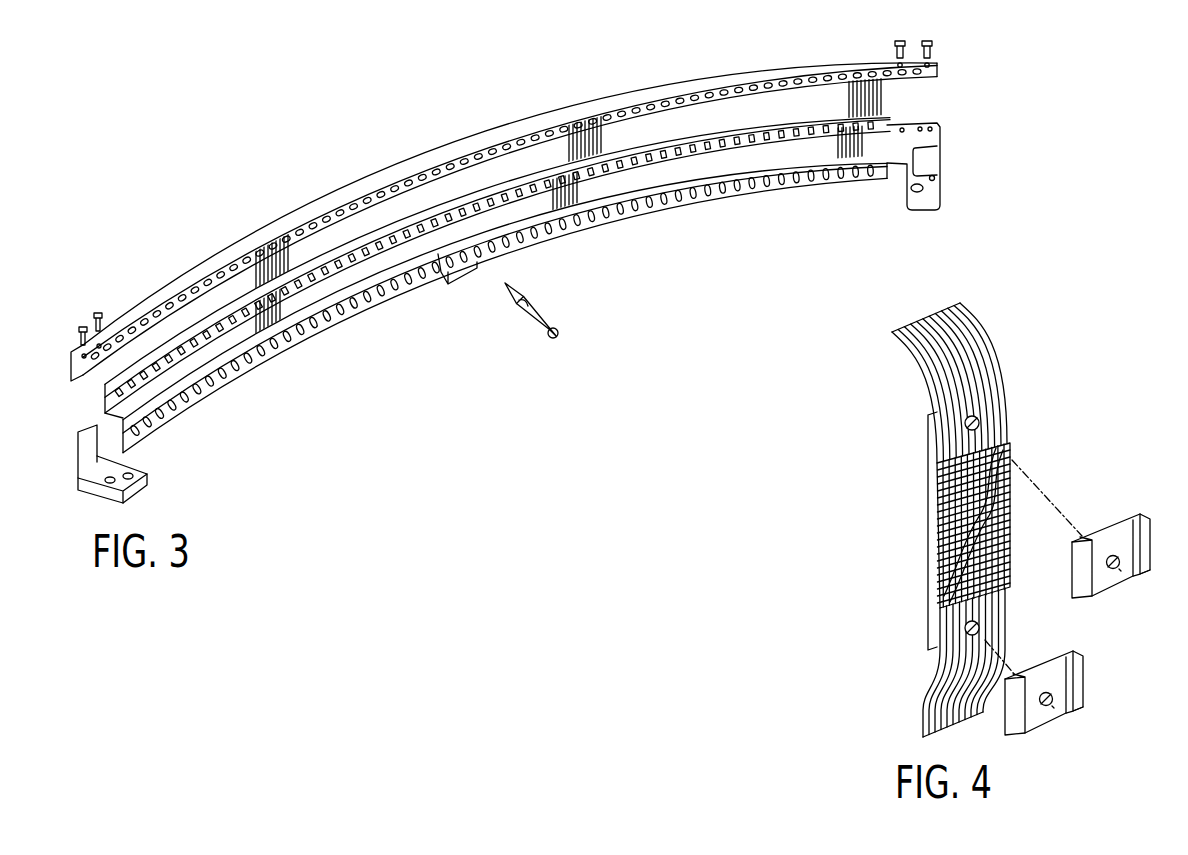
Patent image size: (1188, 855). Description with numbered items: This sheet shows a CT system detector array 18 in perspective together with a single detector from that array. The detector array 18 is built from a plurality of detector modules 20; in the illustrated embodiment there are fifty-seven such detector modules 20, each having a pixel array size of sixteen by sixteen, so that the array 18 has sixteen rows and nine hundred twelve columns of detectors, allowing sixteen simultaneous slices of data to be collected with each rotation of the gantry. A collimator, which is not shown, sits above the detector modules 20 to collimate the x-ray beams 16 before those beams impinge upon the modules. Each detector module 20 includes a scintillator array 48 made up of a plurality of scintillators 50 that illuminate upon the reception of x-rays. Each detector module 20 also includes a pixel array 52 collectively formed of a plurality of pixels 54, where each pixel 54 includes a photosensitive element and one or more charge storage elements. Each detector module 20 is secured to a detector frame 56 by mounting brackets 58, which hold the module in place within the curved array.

In FIG. 3, the x-ray beams 16 is at (540, 318).
In FIG. 3, the detector array 18 is at (397, 158).
In FIG. 3, the detector module 20 is at (257, 255).
In FIG. 4, the detector module 20 is at (1085, 365).
In FIG. 4, the scintillator array 48 is at (1018, 509).
In FIG. 4, the scintillator 50 is at (1010, 568).
In FIG. 4, the pixel array 52 is at (931, 598).
In FIG. 4, the pixel 54 is at (947, 530).
In FIG. 3, the detector frame 56 is at (103, 403).
In FIG. 4, the mounting bracket 58 is at (1130, 530).